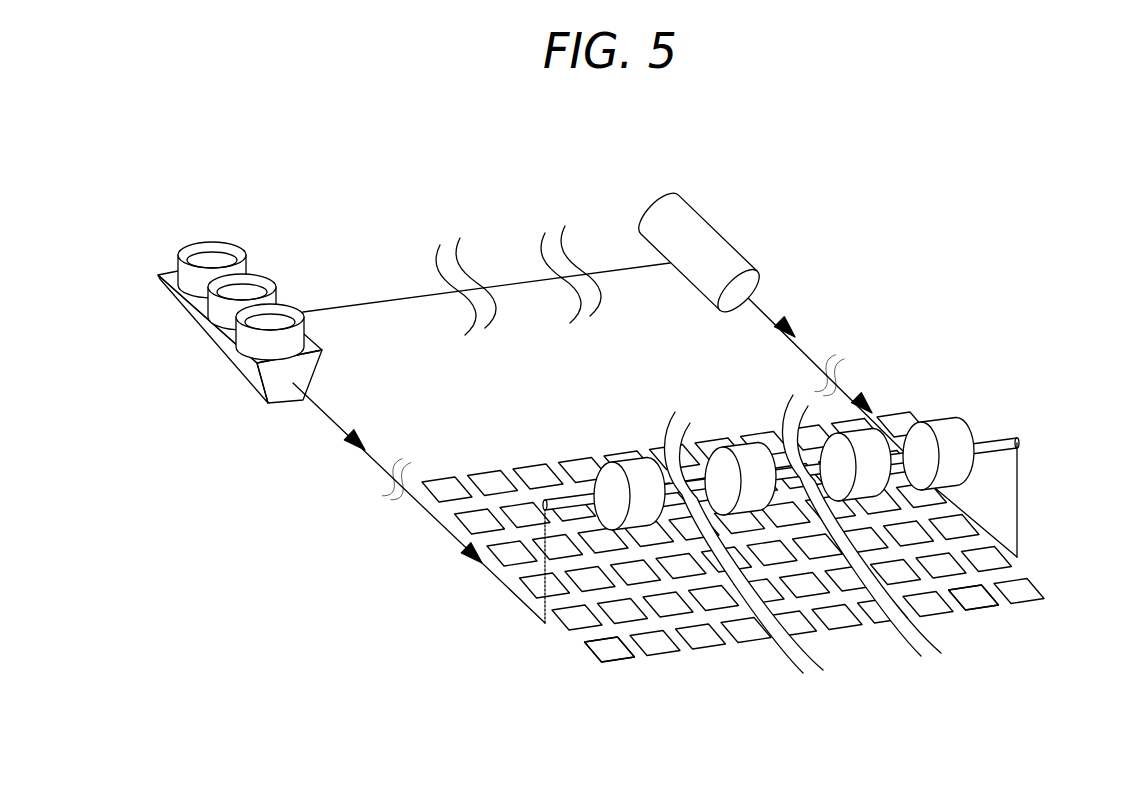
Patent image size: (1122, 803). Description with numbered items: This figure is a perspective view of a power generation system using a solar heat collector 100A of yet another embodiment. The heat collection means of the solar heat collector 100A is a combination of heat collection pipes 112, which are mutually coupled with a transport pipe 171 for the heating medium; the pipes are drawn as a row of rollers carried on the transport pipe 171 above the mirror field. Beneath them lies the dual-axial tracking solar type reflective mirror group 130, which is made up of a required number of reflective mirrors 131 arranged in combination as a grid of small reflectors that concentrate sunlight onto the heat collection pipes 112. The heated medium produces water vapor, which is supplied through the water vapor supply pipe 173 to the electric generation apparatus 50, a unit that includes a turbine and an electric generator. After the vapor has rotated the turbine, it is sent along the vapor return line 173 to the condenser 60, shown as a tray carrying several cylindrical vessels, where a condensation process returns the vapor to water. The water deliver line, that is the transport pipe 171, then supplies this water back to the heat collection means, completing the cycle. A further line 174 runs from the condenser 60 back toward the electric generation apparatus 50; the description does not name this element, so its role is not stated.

The electric generation apparatus 50 is at (702, 210).
The condenser 60 is at (225, 350).
The solar heat collector 100A is at (976, 385).
The heat collection pipes 112 is at (640, 455).
The dual-axial tracking solar type reflective mirror group 130 is at (718, 662).
The reflective mirrors 131 is at (608, 648).
The transport pipe 171 is at (578, 498).
The water vapor supply pipe 173 is at (807, 352).
The conveyance path 174 is at (376, 303).